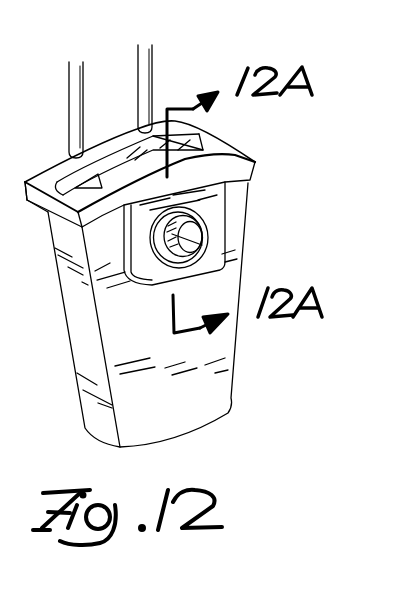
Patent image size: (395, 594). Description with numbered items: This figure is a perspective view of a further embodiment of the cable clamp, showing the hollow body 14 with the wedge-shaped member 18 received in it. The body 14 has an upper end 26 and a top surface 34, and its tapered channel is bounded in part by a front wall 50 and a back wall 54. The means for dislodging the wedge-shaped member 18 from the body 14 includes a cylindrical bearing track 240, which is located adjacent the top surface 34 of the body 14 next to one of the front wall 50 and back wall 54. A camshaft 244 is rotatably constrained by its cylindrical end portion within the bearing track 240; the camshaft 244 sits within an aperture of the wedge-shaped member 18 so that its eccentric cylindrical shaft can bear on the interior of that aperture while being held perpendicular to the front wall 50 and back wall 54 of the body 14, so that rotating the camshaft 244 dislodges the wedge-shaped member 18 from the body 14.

The hollow body 14 is at (176, 387).
The wedge-shaped member 18 is at (122, 156).
The upper end 26 is at (250, 174).
The top surface 34 is at (222, 148).
The front wall 50 is at (50, 211).
The back wall 54 is at (63, 174).
The cylindrical bearing track 240 is at (208, 225).
The camshaft 244 is at (192, 247).